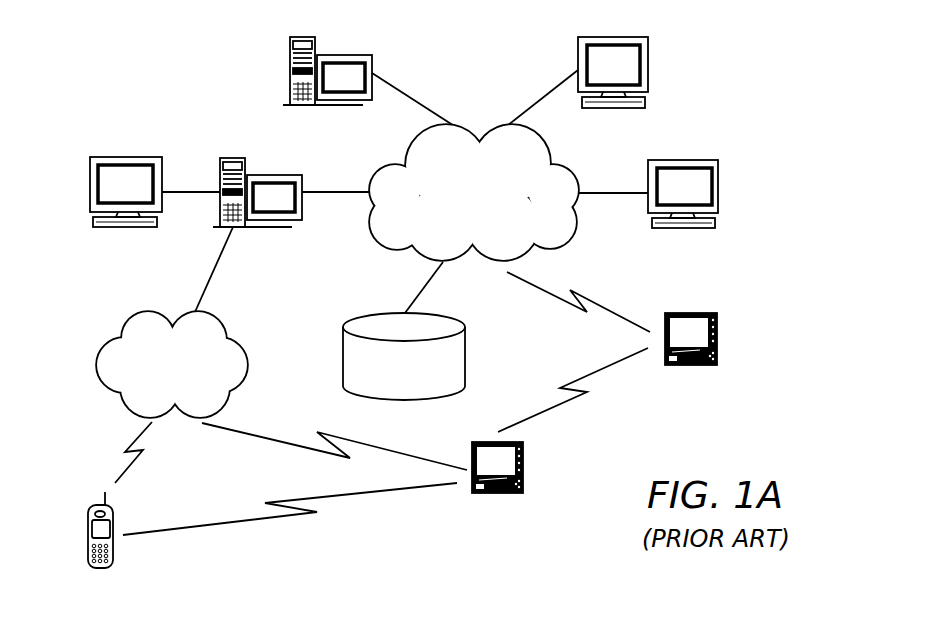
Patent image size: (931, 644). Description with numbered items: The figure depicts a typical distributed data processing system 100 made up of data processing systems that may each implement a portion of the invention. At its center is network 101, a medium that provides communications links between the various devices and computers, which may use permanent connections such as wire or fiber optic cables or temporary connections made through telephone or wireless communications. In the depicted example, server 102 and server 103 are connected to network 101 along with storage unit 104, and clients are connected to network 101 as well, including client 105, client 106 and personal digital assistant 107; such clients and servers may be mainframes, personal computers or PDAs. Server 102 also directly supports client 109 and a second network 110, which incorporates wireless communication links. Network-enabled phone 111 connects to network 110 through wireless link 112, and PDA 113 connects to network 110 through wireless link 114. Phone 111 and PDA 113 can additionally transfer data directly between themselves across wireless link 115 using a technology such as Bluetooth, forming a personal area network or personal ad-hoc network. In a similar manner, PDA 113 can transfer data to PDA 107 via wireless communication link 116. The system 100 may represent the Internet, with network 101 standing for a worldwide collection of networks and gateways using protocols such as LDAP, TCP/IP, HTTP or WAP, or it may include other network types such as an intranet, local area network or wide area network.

The distributed data processing system 100 is at (150, 83).
The network 101 is at (488, 216).
The server 102 is at (232, 157).
The server 103 is at (290, 73).
The storage unit 104 is at (343, 360).
The client 105 is at (649, 68).
The client 106 is at (719, 190).
The personal digital assistant 107 is at (718, 337).
The client 109 is at (125, 157).
The network 110 is at (188, 386).
The network-enabled phone 111 is at (113, 547).
The wireless link 112 is at (137, 470).
The personal digital assistant 113 is at (524, 468).
The wireless link 114 is at (252, 432).
The wireless link 115 is at (227, 522).
The wireless communication link 116 is at (550, 407).